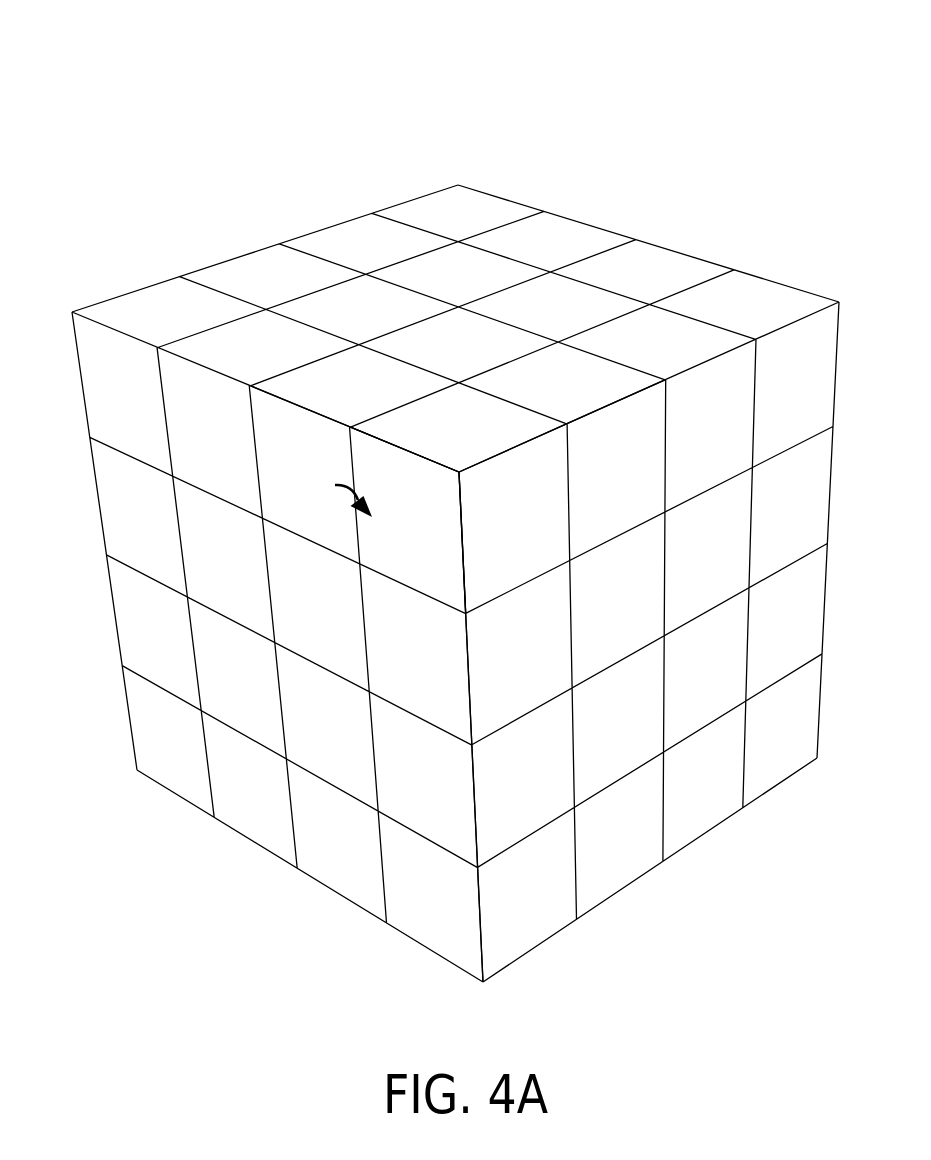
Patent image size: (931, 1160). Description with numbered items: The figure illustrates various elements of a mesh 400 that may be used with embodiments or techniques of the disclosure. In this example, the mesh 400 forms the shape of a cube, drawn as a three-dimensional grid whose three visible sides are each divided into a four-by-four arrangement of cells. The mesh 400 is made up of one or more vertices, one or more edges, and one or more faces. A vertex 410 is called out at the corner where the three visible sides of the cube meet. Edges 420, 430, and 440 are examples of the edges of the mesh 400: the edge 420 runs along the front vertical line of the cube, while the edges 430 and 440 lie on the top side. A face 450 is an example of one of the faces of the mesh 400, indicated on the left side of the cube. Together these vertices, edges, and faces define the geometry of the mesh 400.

The mesh 400 is at (465, 92).
The vertex 410 is at (460, 472).
The edge 420 is at (468, 668).
The edge 430 is at (299, 407).
The edge 440 is at (613, 404).
The face 450 is at (331, 494).